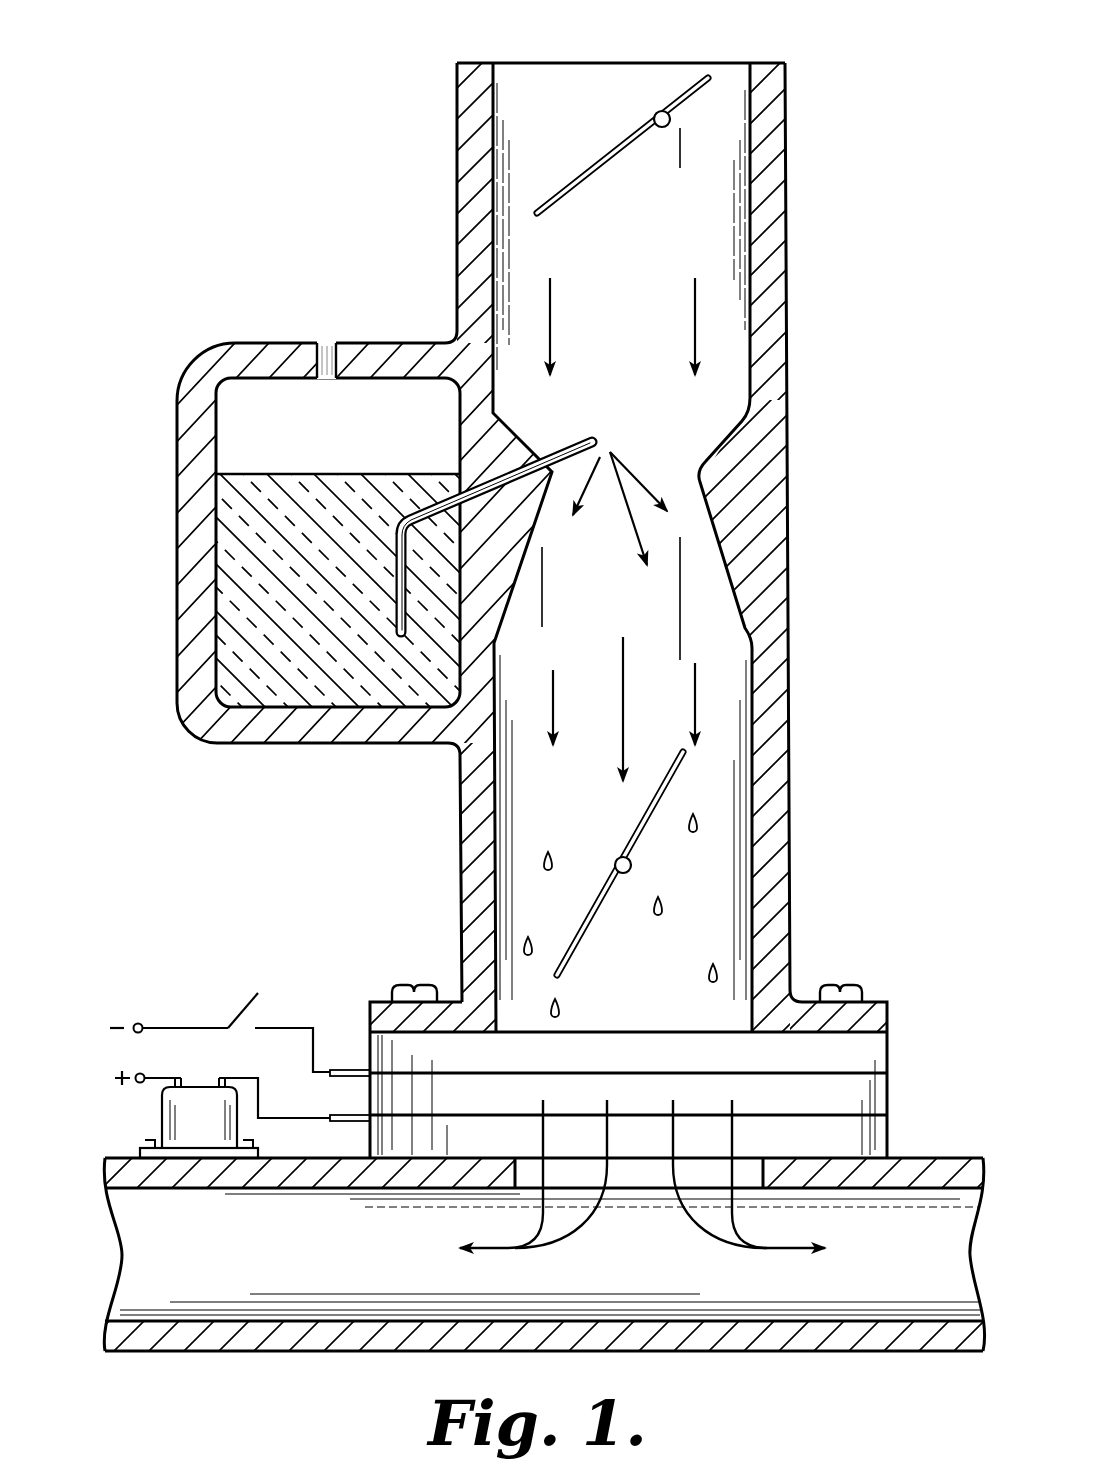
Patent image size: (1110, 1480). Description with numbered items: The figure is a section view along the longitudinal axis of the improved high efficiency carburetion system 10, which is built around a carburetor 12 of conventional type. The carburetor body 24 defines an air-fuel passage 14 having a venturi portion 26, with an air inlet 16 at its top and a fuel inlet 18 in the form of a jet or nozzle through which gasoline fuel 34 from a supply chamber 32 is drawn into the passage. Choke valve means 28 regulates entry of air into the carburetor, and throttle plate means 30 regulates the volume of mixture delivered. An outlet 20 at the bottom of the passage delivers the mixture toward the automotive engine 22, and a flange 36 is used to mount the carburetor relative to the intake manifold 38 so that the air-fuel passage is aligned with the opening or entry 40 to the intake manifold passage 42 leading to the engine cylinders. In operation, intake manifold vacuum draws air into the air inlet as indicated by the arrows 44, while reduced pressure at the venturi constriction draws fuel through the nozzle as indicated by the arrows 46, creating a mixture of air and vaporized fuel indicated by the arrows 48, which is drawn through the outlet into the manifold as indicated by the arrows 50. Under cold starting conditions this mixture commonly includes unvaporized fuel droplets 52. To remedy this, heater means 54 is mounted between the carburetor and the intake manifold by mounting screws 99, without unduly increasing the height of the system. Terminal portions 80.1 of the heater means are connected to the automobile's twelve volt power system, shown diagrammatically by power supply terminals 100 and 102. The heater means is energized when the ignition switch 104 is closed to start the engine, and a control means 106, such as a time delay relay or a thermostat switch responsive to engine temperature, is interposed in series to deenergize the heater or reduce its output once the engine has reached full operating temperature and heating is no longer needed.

The carburetion system 10 is at (375, 222).
The carburetor 12 is at (602, 524).
The air-fuel passage 14 is at (630, 256).
The air inlet 16 is at (562, 84).
The fuel inlet 18 is at (596, 440).
The outlet 20 is at (742, 1003).
The automotive engine 22 is at (555, 1226).
The body 24 is at (768, 306).
The venturi portion 26 is at (710, 484).
The choke valve means 28 is at (592, 178).
The throttle plate means 30 is at (642, 822).
The supply chamber 32 is at (475, 527).
The gasoline fuel 34 is at (328, 473).
The flange 36 is at (668, 1048).
The intake manifold 38 is at (952, 1170).
The opening or entry 40 is at (755, 1172).
The intake manifold passage 42 is at (285, 1268).
The arrows indicating air flow 44 is at (553, 335).
The arrows indicating fuel flow 46 is at (636, 476).
The air-fuel mixture 48 is at (556, 726).
The arrows indicating mixture flow 50 is at (590, 1230).
The fuel droplets 52 is at (664, 907).
The heater means 54 is at (889, 1087).
The terminal portion 80.1 is at (342, 1068).
The mounting screws 99 is at (848, 984).
The power supply terminal 100 is at (142, 1026).
The power supply terminal 102 is at (145, 1077).
The ignition switch 104 is at (238, 1010).
The control means 106 is at (238, 1128).